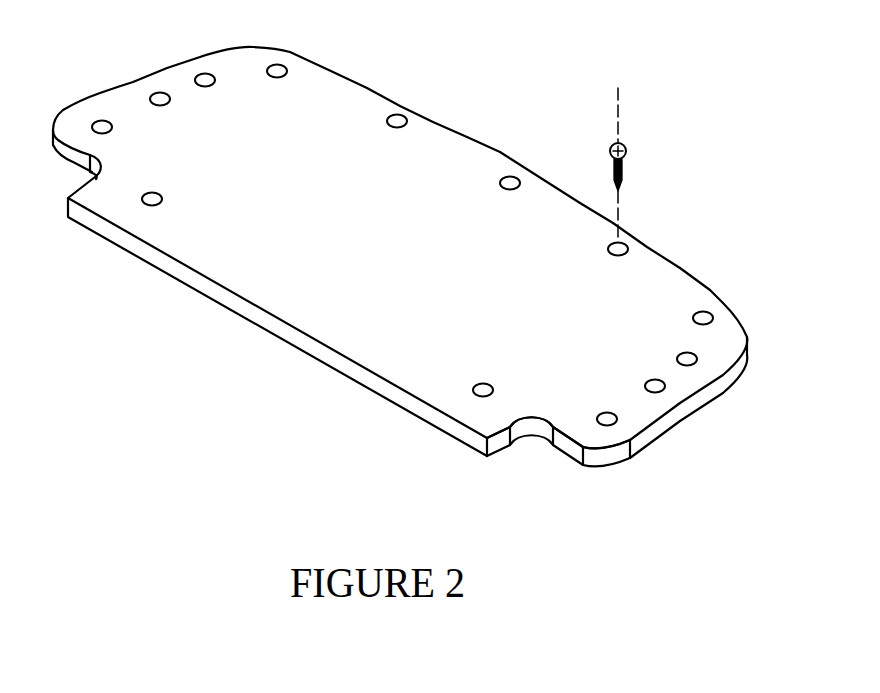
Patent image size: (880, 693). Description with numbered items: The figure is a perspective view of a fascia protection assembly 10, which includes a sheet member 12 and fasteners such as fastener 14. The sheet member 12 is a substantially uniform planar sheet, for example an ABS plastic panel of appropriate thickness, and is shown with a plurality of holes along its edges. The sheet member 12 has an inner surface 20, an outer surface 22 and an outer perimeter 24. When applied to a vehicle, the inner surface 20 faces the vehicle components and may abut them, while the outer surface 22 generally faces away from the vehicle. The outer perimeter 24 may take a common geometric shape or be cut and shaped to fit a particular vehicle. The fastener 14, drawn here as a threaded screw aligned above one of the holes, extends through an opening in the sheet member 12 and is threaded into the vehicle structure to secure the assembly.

The fascia protection assembly 10 is at (92, 50).
The sheet member 12 is at (290, 51).
The fastener 14 is at (658, 174).
The inner surface 20 is at (435, 143).
The outer surface 22 is at (557, 447).
The outer perimeter 24 is at (748, 350).